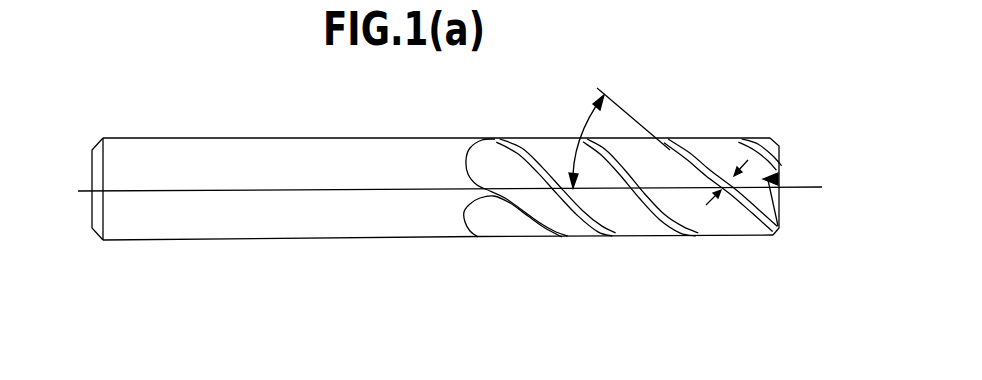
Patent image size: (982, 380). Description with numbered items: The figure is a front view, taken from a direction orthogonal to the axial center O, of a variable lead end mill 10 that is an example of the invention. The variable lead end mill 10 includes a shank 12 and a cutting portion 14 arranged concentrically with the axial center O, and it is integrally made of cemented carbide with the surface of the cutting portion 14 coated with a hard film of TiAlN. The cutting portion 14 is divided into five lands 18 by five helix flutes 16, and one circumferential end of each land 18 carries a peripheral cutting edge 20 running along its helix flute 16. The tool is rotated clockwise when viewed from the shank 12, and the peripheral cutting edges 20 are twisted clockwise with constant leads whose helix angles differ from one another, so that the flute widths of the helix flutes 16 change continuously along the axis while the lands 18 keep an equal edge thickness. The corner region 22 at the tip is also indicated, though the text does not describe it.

The variable lead end mill 10 is at (676, 84).
The shank 12 is at (271, 227).
The cutting portion 14 is at (521, 274).
The helix flute 16 is at (706, 150).
The land 18 is at (528, 163).
The peripheral cutting edge 20 is at (570, 224).
The end cutting edge 22 is at (780, 162).